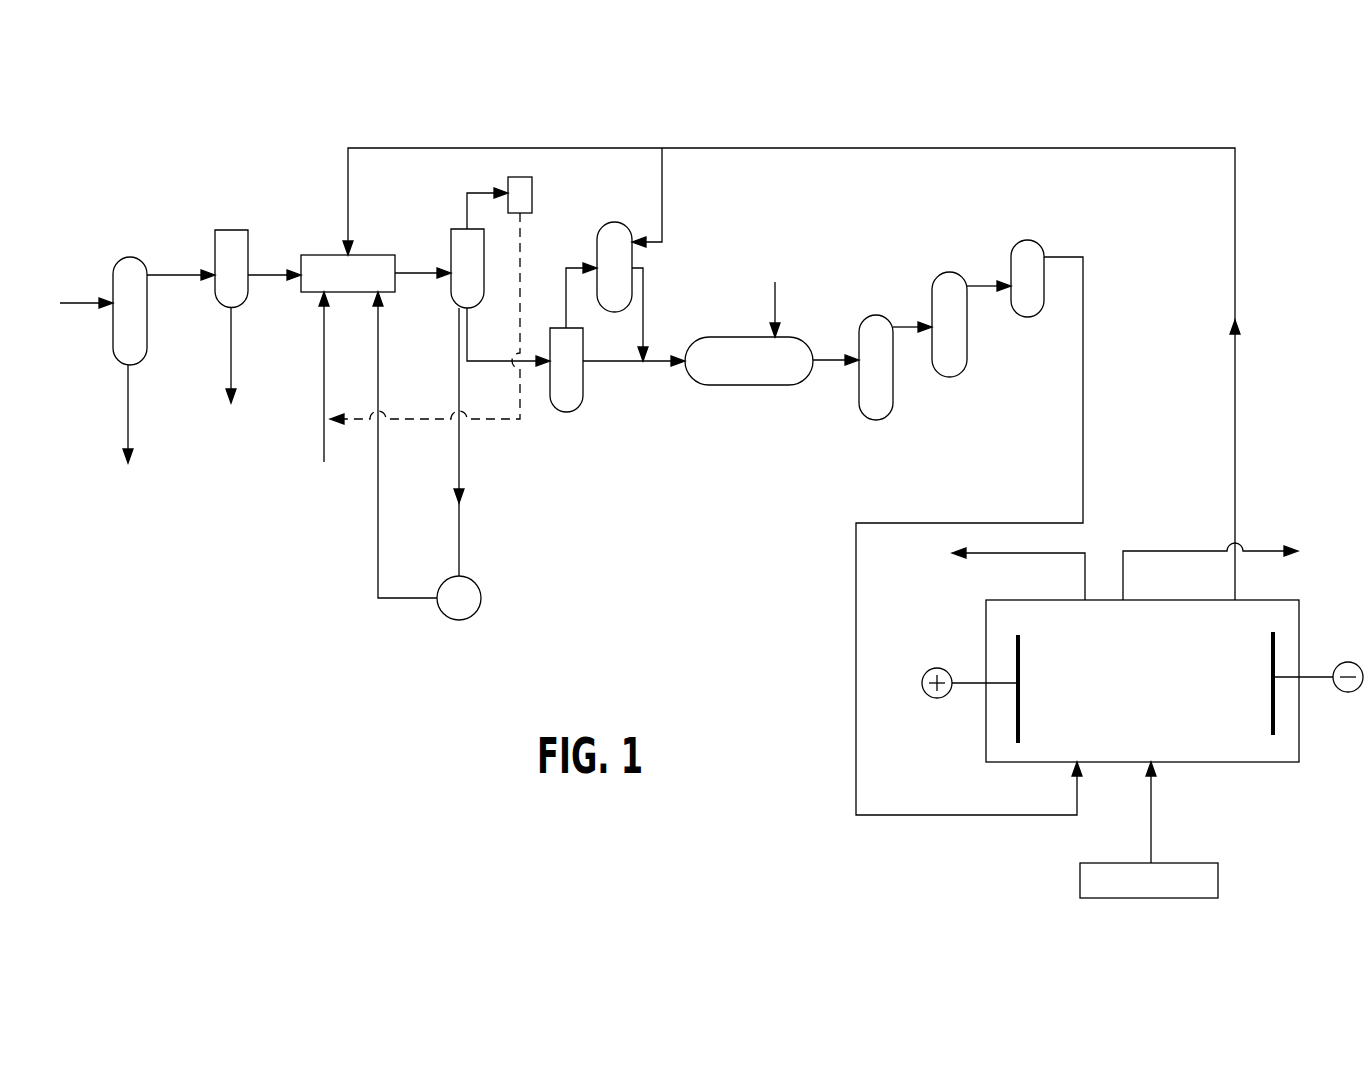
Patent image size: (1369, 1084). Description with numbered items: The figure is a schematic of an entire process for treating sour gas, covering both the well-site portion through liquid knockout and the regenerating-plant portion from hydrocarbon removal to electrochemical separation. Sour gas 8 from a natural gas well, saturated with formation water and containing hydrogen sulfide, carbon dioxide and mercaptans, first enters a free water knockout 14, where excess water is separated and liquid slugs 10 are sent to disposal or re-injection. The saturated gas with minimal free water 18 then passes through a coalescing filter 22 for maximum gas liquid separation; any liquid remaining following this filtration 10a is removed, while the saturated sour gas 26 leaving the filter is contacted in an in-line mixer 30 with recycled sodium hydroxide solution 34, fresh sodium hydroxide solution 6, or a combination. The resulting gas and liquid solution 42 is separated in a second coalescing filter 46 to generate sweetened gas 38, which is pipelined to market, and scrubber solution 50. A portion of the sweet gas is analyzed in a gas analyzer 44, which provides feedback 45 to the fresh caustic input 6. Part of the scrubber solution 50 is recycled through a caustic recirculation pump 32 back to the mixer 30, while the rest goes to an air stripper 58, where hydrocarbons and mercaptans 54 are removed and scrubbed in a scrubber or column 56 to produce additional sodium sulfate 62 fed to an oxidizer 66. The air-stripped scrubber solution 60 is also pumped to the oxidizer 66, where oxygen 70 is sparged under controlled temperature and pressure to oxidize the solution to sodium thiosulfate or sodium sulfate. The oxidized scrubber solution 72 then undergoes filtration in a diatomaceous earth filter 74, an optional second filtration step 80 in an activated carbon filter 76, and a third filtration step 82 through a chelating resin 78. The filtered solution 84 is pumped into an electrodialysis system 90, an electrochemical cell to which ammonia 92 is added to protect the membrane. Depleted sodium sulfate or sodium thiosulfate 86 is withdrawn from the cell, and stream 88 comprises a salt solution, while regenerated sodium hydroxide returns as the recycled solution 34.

The fresh sodium hydroxide solution 6 is at (320, 450).
The sour gas 8 is at (70, 300).
The liquid slugs 10 is at (128, 442).
The liquid remaining following filtration 10a is at (231, 378).
The free water knockout 14 is at (128, 257).
The saturated gas with minimal free water 18 is at (175, 275).
The filter 22 is at (232, 230).
The saturated sour gas 26 is at (275, 275).
The in-line mixer 30 is at (312, 293).
The caustic recirculation pump 32 is at (480, 607).
The recycled sodium hydroxide solution 34 is at (405, 148).
The sweetened gas 38 is at (478, 190).
The gas and liquid solution 42 is at (410, 273).
The gas analyzer 44 is at (533, 180).
The feedback 45 is at (487, 420).
The second filter 46 is at (451, 290).
The scrubber solution 50 is at (488, 361).
The hydrocarbons and mercaptans 54 is at (577, 262).
The scrubber or column 56 is at (612, 222).
The stripper 58 is at (583, 397).
The air-stripped scrubber solution 60 is at (633, 362).
The additional sodium sulfate 62 is at (648, 297).
The oxidizer 66 is at (728, 337).
The oxygen 70 is at (775, 290).
The oxidized scrubber solution 72 is at (823, 360).
The diatomaceous earth filter 74 is at (880, 420).
The activated carbon filter 76 is at (950, 377).
The chelating resin 78 is at (1026, 317).
The second filtration step 80 is at (905, 327).
The third filtration step 82 is at (985, 286).
The filtered solution 84 is at (1083, 310).
The depleted sodium sulfate or sodium thiosulfate 86 is at (1010, 553).
The salt solution stream 88 is at (1265, 551).
The electrodialysis system 90 is at (1235, 763).
The ammonia 92 is at (1200, 863).